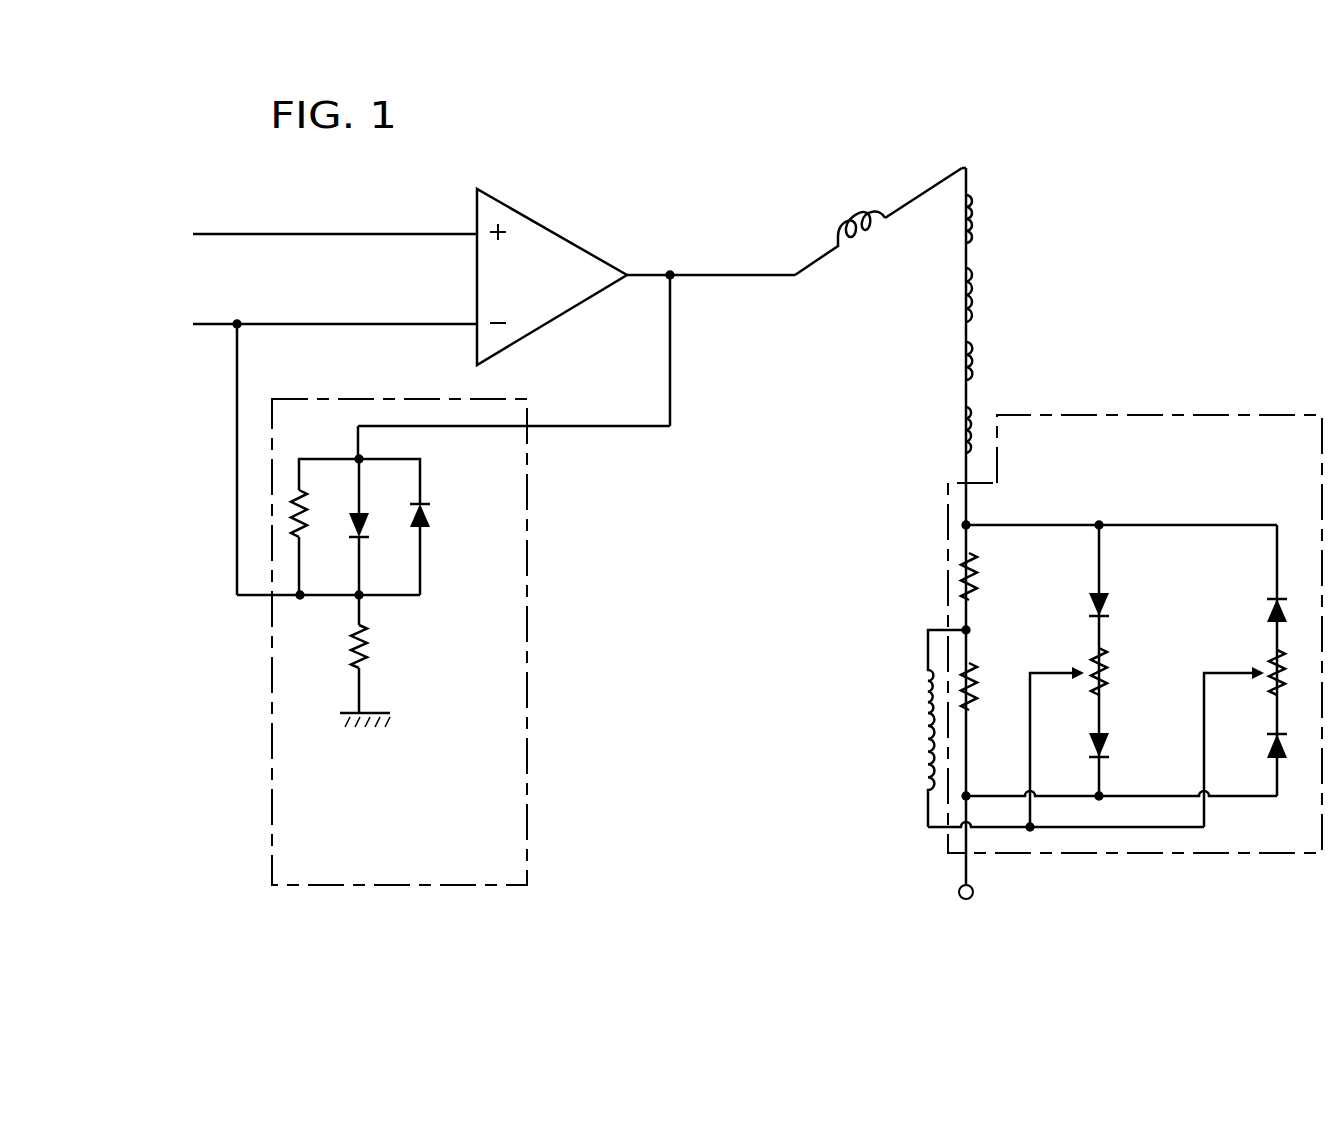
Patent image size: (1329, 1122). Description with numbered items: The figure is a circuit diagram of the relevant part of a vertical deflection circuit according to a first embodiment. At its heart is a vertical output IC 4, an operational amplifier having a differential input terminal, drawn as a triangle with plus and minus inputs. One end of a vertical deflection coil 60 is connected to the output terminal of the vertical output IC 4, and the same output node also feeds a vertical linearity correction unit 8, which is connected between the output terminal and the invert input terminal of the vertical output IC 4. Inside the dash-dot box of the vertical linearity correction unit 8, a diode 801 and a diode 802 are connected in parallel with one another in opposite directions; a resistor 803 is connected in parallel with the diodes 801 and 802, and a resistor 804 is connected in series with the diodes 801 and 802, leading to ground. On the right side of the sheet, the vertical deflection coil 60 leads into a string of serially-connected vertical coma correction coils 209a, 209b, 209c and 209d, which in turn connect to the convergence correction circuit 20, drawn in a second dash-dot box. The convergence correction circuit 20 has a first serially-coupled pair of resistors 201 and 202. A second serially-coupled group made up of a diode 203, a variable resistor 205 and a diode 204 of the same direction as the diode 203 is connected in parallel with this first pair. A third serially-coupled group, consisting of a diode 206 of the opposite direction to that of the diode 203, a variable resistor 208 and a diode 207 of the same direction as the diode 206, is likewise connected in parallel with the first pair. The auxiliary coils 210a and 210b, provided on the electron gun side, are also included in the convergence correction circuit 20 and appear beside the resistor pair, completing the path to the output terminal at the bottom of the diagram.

The vertical output IC 4 is at (587, 251).
The vertical linearity correction unit 8 is at (365, 885).
The convergence correction circuit 20 is at (1174, 415).
The vertical deflection coil 60 is at (858, 242).
The resistor 201 is at (980, 577).
The resistor 202 is at (975, 655).
The diode 203 is at (1105, 617).
The diode 204 is at (1108, 740).
The variable resistor 205 is at (1108, 695).
The diode 206 is at (1280, 588).
The diode 207 is at (1283, 758).
The variable resistor 208 is at (1268, 660).
The vertical coma correction coil 209a is at (972, 213).
The vertical coma correction coil 209b is at (972, 284).
The vertical coma correction coil 209c is at (972, 353).
The vertical coma correction coil 209d is at (972, 424).
The auxiliary coil 210a is at (928, 677).
The auxiliary coil 210b is at (928, 757).
The diode 801 is at (430, 525).
The diode 802 is at (354, 510).
The resistor 803 is at (297, 537).
The resistor 804 is at (370, 655).